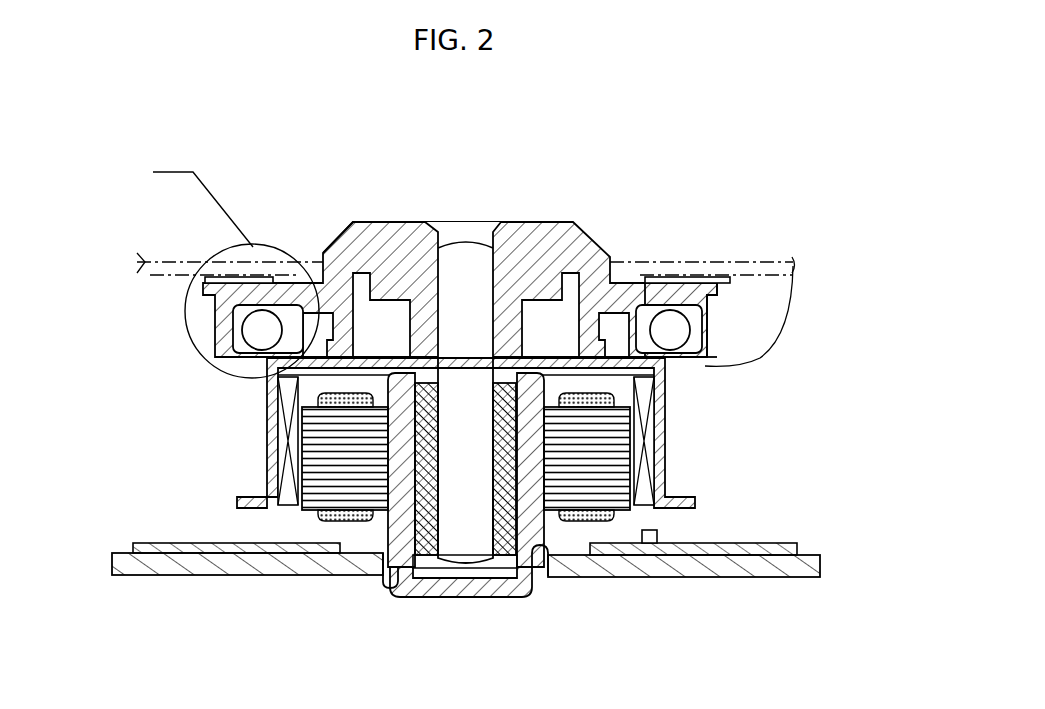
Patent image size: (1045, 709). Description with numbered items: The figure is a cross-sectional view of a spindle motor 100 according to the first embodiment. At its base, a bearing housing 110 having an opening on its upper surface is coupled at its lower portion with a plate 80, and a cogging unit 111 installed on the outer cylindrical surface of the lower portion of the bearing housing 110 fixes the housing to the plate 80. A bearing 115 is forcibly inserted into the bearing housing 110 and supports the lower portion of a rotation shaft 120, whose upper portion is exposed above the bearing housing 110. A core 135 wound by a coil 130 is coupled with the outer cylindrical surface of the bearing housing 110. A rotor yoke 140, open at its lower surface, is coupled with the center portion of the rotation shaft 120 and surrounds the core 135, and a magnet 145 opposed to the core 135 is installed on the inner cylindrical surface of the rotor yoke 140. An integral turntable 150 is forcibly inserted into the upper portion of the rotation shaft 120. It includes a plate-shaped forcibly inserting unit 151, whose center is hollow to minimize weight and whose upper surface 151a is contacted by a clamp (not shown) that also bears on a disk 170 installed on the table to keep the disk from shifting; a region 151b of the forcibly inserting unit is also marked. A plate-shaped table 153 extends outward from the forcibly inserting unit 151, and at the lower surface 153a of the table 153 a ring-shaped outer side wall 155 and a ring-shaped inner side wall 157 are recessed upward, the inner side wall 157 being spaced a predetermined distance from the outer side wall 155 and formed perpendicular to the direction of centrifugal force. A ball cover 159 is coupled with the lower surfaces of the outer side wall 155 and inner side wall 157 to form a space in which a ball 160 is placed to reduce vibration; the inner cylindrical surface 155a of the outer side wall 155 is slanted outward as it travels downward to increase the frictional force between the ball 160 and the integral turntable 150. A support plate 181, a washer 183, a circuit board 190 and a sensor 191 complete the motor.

The spindle motor 100 is at (272, 184).
The bearing housing 110 is at (506, 582).
The cogging unit 111 is at (574, 578).
The bearing 115 is at (412, 580).
The rotation shaft 120 is at (462, 265).
The coil 130 is at (303, 505).
The core 135 is at (340, 523).
The rotor yoke 140 is at (650, 492).
The magnet 145 is at (647, 443).
The integral turntable 150 is at (796, 159).
The forcibly inserting unit 151 is at (552, 221).
The upper surface of the forcibly inserting unit 151a is at (362, 222).
The hub groove 151b is at (388, 320).
The table 153 is at (727, 278).
The lower surface of the table 153a is at (717, 347).
The outer side wall 155 is at (697, 292).
The inner cylindrical surface of the outer side wall 155a is at (700, 358).
The inner side wall 157 is at (637, 278).
The ball cover 159 is at (763, 278).
The ball 160 is at (262, 330).
The disk 170 is at (134, 262).
The support plate 181 is at (472, 578).
The washer 183 is at (387, 388).
The circuit board 190 is at (750, 551).
The sensor 191 is at (657, 535).
The plate 80 is at (665, 572).